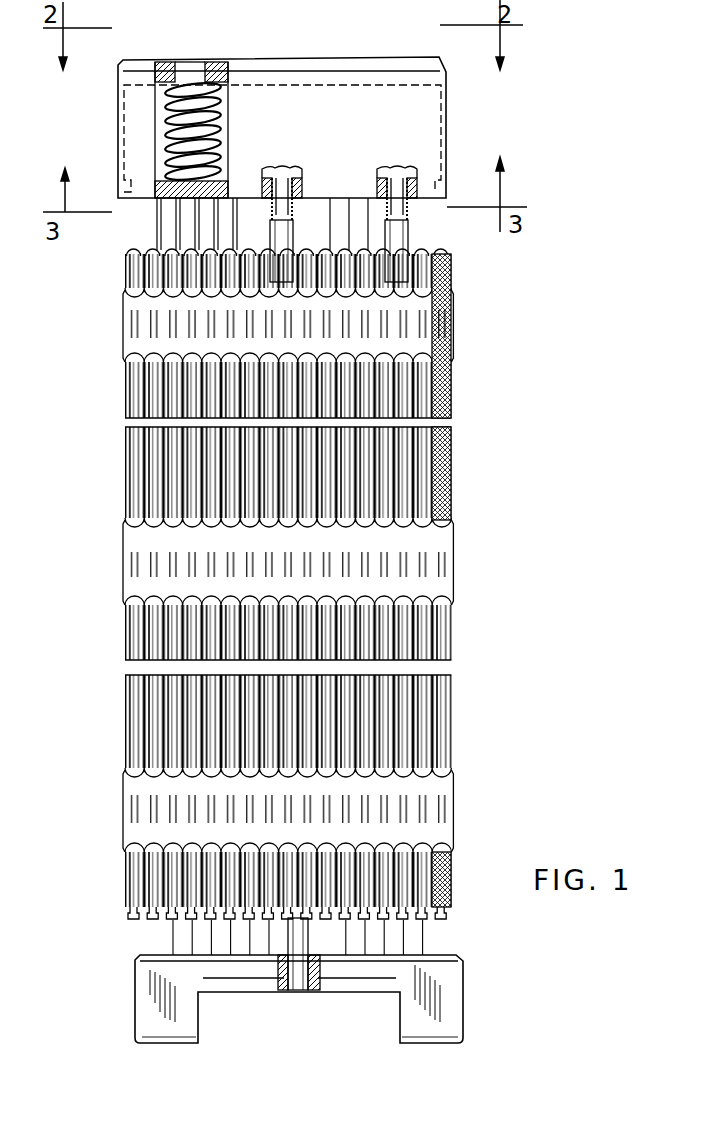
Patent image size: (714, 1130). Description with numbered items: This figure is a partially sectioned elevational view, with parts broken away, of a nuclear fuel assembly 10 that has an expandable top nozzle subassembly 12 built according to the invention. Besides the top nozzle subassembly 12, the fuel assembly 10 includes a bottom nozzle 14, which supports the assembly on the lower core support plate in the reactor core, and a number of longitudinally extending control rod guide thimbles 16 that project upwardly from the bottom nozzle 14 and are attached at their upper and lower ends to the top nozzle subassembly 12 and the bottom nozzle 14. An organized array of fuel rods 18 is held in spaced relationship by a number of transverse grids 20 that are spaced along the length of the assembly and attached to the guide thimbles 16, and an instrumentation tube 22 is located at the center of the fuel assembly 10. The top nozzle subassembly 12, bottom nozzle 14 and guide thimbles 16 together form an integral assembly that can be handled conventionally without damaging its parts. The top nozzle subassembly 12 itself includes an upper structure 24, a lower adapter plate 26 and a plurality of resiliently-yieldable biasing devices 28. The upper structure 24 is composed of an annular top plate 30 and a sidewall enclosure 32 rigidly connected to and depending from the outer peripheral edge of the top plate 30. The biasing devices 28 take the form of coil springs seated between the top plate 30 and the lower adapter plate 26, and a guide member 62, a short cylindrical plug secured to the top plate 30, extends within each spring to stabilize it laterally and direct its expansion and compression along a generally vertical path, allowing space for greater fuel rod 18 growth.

The fuel assembly 10 is at (518, 165).
The expandable top nozzle subassembly 12 is at (447, 130).
The bottom nozzle 14 is at (462, 1001).
The control rod guide thimbles 16 is at (438, 227).
The fuel rods 18 is at (125, 626).
The transverse grids 20 is at (122, 310).
The instrumentation tube 22 is at (308, 990).
The upper structure 24 is at (318, 55).
The lower adapter plate 26 is at (157, 207).
The resiliently-yieldable biasing devices 28 is at (163, 113).
The top plate 30 is at (218, 62).
The sidewall enclosure 32 is at (116, 136).
The guide member 62 is at (187, 63).